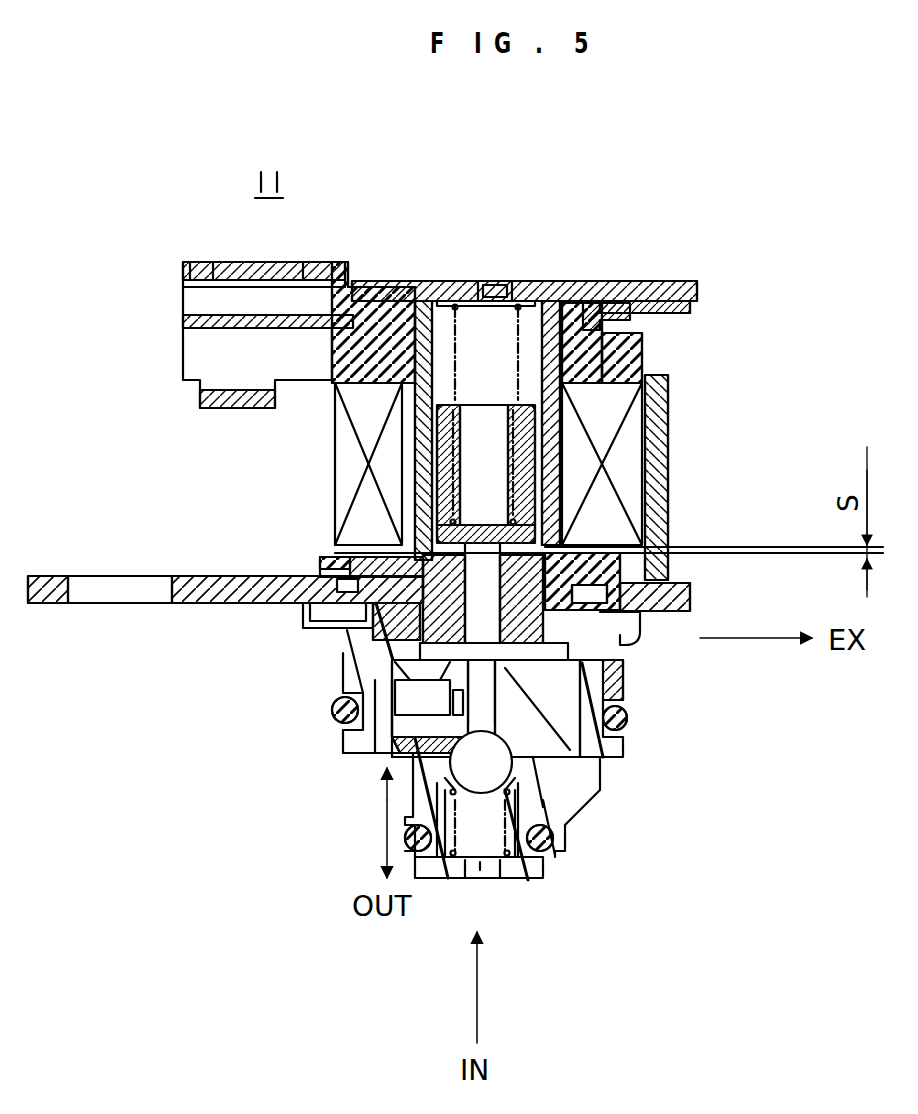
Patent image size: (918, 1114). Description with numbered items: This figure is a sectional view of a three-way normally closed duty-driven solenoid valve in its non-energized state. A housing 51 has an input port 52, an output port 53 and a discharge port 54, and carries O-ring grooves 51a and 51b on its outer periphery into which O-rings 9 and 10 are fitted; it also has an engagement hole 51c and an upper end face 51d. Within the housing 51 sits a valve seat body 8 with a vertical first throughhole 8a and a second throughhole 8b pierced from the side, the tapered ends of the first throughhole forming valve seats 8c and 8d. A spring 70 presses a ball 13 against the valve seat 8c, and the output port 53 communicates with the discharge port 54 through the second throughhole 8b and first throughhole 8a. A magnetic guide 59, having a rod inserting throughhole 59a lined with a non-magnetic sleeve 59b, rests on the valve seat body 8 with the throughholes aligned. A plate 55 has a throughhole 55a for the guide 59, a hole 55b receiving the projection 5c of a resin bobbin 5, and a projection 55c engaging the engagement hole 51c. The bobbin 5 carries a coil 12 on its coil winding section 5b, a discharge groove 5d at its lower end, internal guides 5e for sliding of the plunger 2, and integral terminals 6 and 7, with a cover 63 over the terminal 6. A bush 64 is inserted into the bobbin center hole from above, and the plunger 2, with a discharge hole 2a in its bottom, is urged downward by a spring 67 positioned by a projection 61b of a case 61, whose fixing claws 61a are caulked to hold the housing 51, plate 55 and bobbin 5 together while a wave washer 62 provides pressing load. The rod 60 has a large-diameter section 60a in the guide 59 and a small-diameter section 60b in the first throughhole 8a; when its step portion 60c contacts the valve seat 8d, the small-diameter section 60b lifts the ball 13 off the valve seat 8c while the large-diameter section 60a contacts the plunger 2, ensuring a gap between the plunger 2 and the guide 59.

The plunger 2 is at (505, 462).
The discharge hole 2a is at (548, 478).
The bobbin 5 is at (655, 350).
The coil winding section 5b is at (395, 455).
The projection 5c is at (552, 530).
The discharge groove 5d is at (430, 560).
The guides 5e is at (560, 432).
The terminal 6 is at (183, 318).
The terminal 7 is at (690, 307).
The valve seat body 8 is at (550, 755).
The first throughhole 8a is at (558, 748).
The second throughhole 8b is at (400, 740).
The valve seat 8c is at (440, 760).
The valve seat 8d is at (430, 700).
The O-ring 9 is at (553, 840).
The O-ring 10 is at (628, 720).
The coil 12 is at (650, 402).
The ball 13 is at (520, 778).
The housing 51 is at (545, 885).
The O-ring groove 51a is at (538, 882).
The O-ring groove 51b is at (595, 738).
The engagement hole 51c is at (380, 620).
The upper end face 51d is at (400, 580).
The input port 52 is at (477, 865).
The output port 53 is at (405, 740).
The discharge port 54 is at (612, 648).
The plate 55 is at (50, 606).
The throughhole 55a is at (430, 575).
The hole 55b is at (642, 590).
The projection 55c is at (400, 600).
The guide 59 is at (470, 690).
The rod inserting throughhole 59a is at (400, 566).
The sleeve 59b is at (400, 650).
The rod 60 is at (484, 548).
The large-diameter section 60a is at (580, 660).
The small-diameter section 60b is at (547, 665).
The step portion 60c is at (470, 700).
The case 61 is at (637, 281).
The fixing claws 61a is at (660, 627).
The projection 61b is at (500, 299).
The wave washer 62 is at (372, 300).
The cover 63 is at (205, 262).
The bush 64 is at (425, 330).
The spring 67 is at (525, 322).
The spring 70 is at (545, 818).